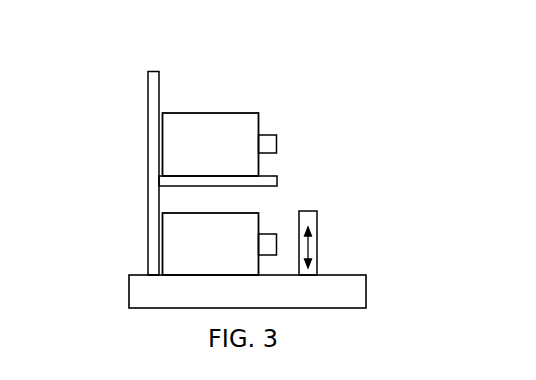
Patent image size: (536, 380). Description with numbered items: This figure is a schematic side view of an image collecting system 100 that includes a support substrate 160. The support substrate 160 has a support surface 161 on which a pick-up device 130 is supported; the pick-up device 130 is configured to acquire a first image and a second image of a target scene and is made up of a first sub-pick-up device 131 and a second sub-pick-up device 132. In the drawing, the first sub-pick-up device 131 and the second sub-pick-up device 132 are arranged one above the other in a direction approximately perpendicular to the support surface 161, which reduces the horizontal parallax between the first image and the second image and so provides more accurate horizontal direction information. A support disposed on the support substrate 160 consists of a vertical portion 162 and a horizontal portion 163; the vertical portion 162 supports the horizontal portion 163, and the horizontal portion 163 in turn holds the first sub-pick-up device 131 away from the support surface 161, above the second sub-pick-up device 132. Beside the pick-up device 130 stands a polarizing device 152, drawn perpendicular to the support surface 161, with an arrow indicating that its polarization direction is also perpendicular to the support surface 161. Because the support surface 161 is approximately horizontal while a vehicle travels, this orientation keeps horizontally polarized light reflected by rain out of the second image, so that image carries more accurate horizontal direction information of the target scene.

The image collecting system 100 is at (258, 34).
The pick-up device 130 is at (291, 190).
The first sub-pick-up device 131 is at (237, 125).
The second sub-pick-up device 132 is at (237, 222).
The polarizing device 152 is at (310, 220).
The support substrate 160 is at (134, 294).
The support surface 161 is at (140, 276).
The vertical portion 162 is at (153, 103).
The horizontal portion 163 is at (168, 182).